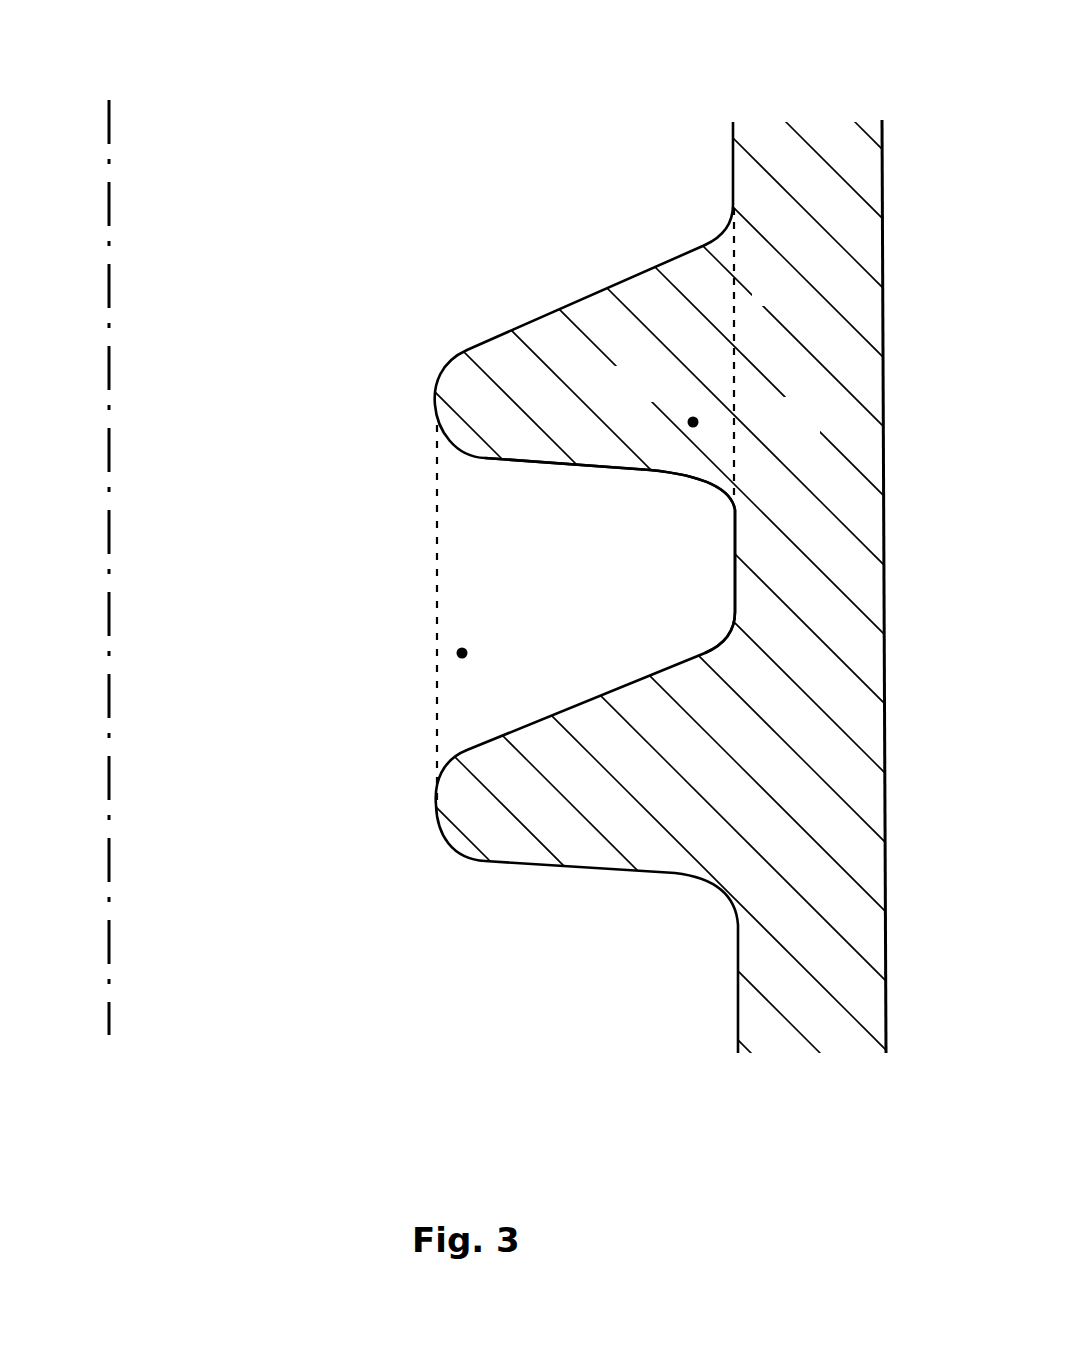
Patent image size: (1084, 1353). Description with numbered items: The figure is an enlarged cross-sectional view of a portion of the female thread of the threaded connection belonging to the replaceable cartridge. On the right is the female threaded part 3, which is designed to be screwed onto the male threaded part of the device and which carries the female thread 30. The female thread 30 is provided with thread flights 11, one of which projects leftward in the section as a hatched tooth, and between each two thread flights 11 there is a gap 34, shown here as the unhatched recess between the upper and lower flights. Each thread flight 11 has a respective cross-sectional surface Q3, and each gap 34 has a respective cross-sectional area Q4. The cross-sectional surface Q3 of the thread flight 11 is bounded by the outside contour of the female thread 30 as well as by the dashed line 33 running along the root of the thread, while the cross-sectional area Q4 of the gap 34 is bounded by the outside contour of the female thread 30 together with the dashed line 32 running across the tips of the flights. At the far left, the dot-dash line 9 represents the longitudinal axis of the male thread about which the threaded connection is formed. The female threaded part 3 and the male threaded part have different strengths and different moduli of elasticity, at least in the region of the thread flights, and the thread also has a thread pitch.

The dot-dash line 9 is at (110, 173).
The female threaded part 3 is at (542, 676).
The female thread 30 is at (855, 282).
The dashed line 33 is at (738, 308).
The thread flight 11 is at (648, 398).
The dashed line 32 is at (433, 501).
The gap 34 is at (536, 595).
The cross-sectional surface Q3 is at (696, 420).
The cross-sectional area Q4 is at (411, 643).